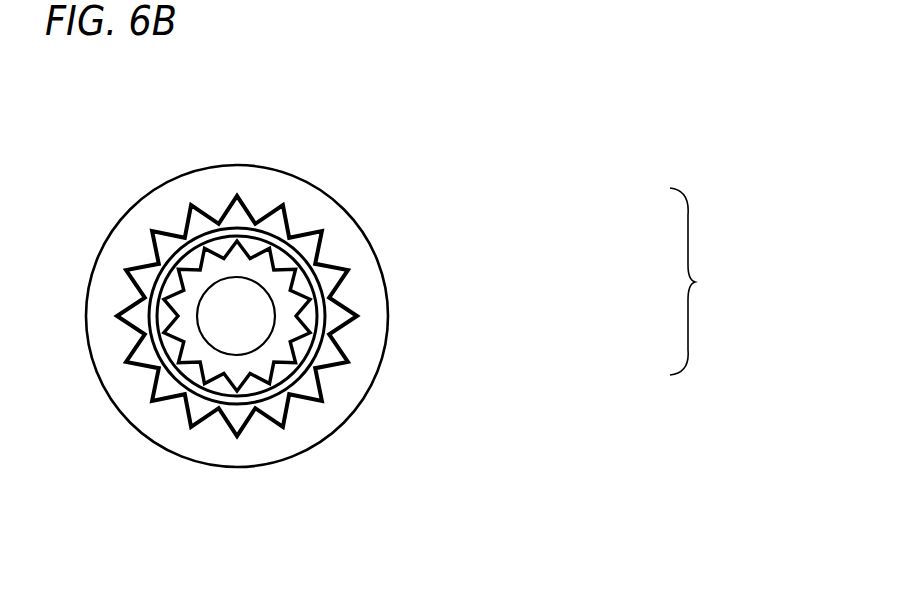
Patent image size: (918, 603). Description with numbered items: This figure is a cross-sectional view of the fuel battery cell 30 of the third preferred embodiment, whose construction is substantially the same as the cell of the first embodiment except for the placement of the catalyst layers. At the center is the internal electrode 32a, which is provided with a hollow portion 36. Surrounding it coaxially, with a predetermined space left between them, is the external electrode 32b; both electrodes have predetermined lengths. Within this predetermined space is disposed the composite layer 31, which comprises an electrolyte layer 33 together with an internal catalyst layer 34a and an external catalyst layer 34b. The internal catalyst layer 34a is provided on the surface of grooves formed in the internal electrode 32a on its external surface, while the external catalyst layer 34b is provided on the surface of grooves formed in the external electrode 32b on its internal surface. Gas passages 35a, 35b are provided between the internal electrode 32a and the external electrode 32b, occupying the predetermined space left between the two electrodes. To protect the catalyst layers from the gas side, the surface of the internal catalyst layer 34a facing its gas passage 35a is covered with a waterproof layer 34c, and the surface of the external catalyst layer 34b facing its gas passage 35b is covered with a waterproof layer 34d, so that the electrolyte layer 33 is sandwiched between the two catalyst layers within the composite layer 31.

The fuel battery cell 30 is at (295, 163).
The composite layer 31 is at (745, 281).
The internal electrode 32a is at (252, 366).
The external electrode 32b is at (343, 395).
The electrolyte layer 33 is at (306, 302).
The internal catalyst layer 34a is at (305, 333).
The external catalyst layer 34b is at (290, 221).
The waterproof layer 34c is at (537, 351).
The waterproof layer 34d is at (297, 232).
The gas passage 35a is at (197, 253).
The gas passage 35b is at (238, 208).
The hollow portion 36 is at (217, 331).